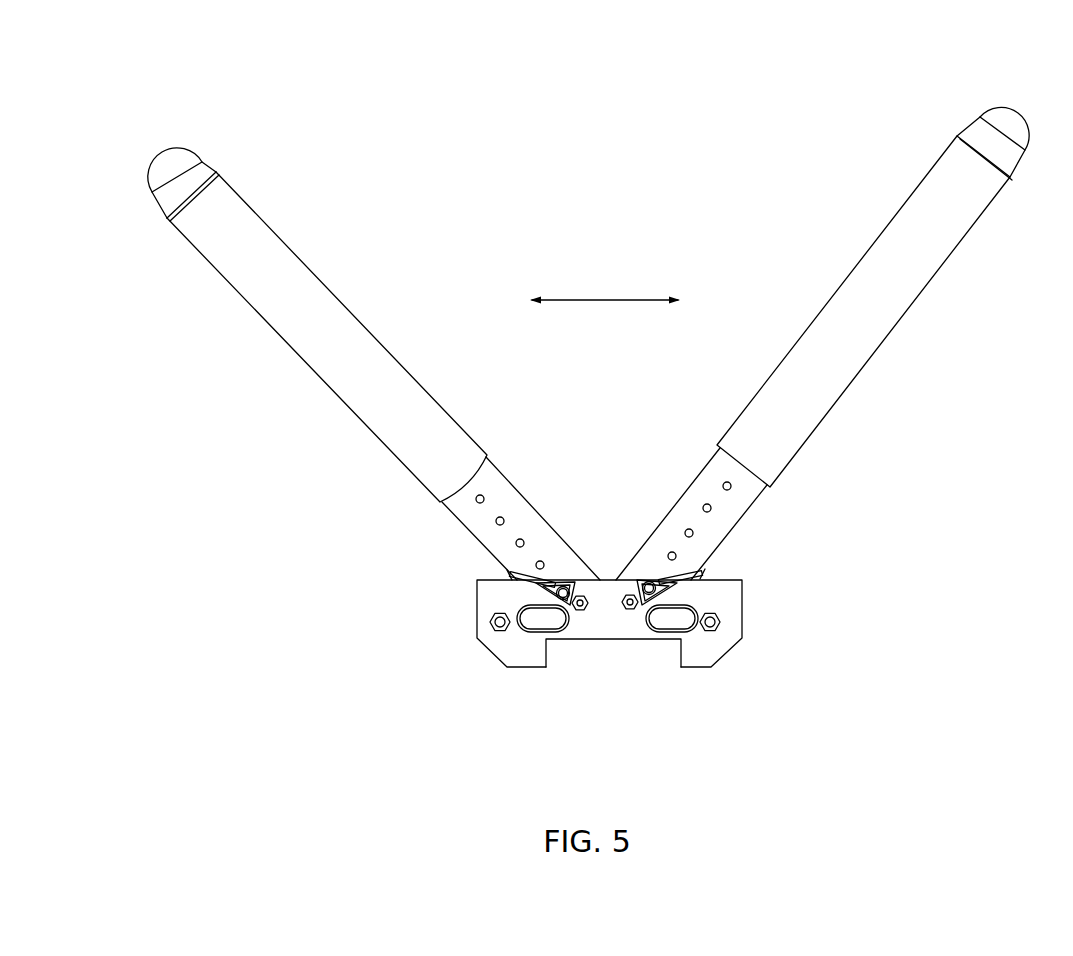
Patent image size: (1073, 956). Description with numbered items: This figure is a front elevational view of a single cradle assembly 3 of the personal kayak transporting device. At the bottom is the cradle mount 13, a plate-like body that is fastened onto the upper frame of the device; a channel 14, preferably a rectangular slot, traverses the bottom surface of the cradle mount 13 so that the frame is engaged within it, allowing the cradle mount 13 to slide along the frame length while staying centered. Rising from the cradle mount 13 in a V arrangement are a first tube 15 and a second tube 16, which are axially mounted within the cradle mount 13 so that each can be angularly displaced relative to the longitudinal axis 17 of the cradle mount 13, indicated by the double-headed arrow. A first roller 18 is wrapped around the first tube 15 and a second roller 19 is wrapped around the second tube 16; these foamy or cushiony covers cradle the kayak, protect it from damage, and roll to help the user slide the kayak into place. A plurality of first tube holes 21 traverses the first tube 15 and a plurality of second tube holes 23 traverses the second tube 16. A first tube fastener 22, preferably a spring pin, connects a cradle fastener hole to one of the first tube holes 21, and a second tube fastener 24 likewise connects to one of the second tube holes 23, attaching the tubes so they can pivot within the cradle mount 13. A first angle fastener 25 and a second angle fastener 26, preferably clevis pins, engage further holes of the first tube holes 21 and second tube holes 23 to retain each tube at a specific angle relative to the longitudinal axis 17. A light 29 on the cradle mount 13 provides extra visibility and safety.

The cradle assembly 3 is at (612, 197).
The cradle mount 13 is at (498, 645).
The channel 14 is at (583, 663).
The first tube 15 is at (190, 166).
The second tube 16 is at (975, 131).
The longitudinal axis 17 is at (635, 298).
The first roller 18 is at (329, 300).
The second roller 19 is at (869, 296).
The plurality of first tube holes 21 is at (484, 500).
The first tube fastener 22 is at (581, 598).
The plurality of second tube holes 23 is at (703, 508).
The second tube fastener 24 is at (628, 607).
The first angle fastener 25 is at (510, 576).
The second angle fastener 26 is at (702, 575).
The light 29 is at (670, 627).